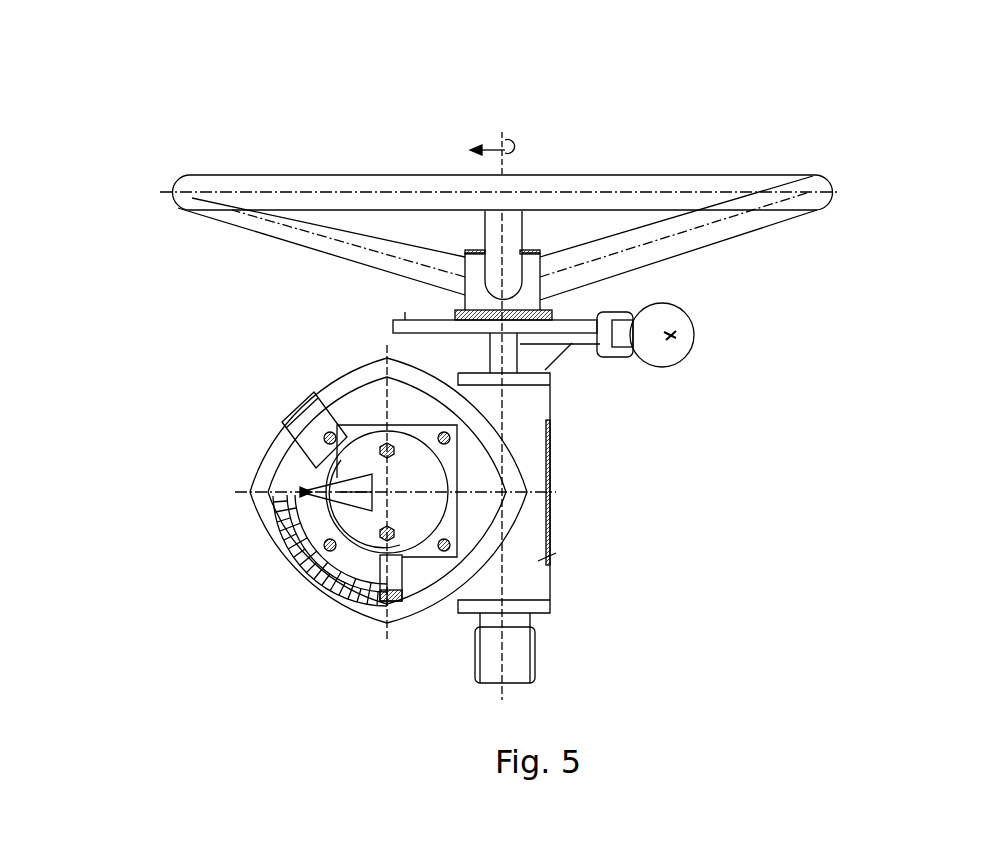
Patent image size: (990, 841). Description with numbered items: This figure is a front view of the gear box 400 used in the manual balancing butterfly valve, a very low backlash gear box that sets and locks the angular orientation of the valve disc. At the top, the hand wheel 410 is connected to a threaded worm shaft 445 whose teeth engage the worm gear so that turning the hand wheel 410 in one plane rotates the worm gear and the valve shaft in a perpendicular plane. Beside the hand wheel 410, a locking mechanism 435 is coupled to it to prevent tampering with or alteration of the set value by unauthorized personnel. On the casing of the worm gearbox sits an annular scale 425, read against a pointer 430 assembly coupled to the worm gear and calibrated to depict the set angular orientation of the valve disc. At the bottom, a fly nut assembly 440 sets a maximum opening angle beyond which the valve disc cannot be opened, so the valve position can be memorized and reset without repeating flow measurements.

The gear box 400 is at (724, 103).
The hand wheel 410 is at (818, 176).
The annular scale 425 is at (348, 604).
The pointer 430 is at (346, 497).
The locking mechanism 435 is at (677, 312).
The fly nut assembly 440 is at (515, 660).
The threaded worm shaft 445 is at (497, 346).